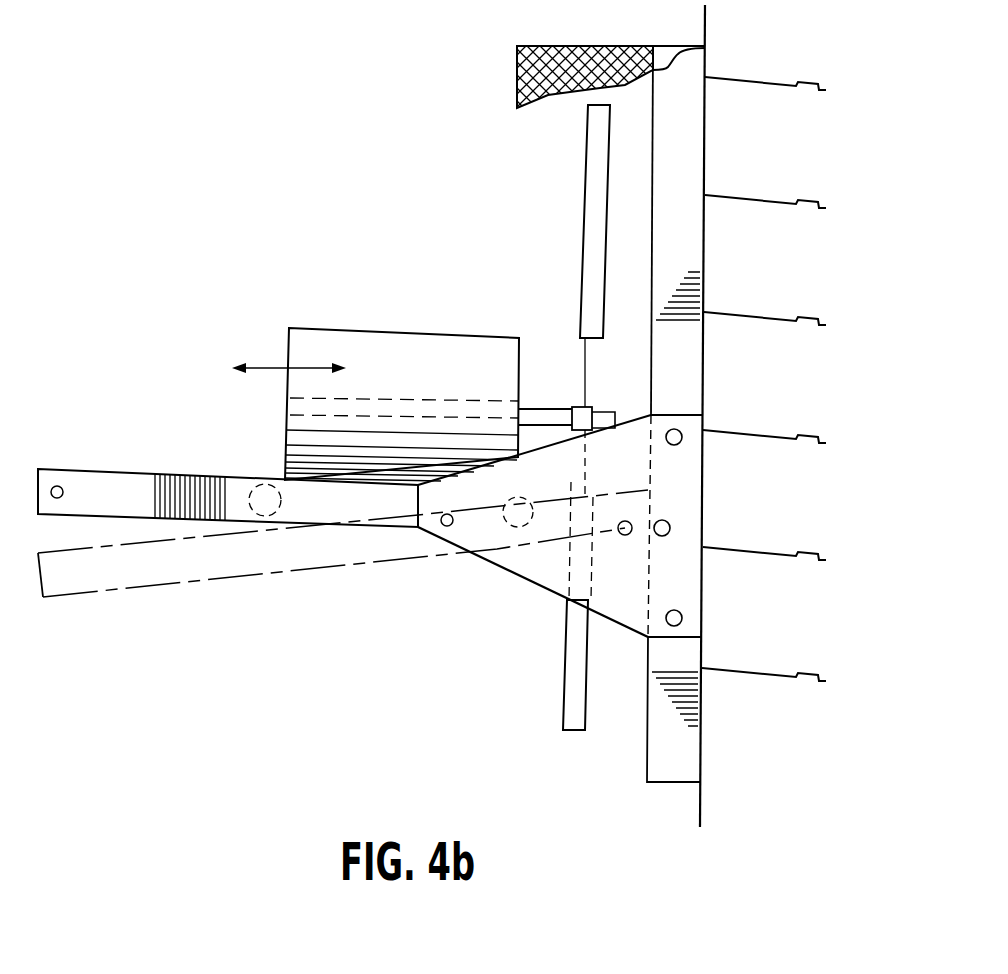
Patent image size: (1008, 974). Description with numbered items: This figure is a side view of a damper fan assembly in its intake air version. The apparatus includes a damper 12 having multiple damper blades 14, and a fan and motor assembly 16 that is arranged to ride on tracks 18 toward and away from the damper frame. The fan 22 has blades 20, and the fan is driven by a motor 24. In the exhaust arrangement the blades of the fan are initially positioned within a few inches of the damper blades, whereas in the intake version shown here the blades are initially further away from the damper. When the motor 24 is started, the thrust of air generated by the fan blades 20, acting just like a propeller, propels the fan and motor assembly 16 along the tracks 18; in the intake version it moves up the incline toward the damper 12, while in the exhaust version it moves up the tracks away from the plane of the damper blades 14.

The damper 12 is at (655, 808).
The damper blades 14 is at (843, 218).
The fan and motor assembly 16 is at (382, 290).
The tracks 18 is at (100, 481).
The fan blades 20 is at (586, 215).
The fan 22 is at (565, 332).
The motor 24 is at (338, 327).